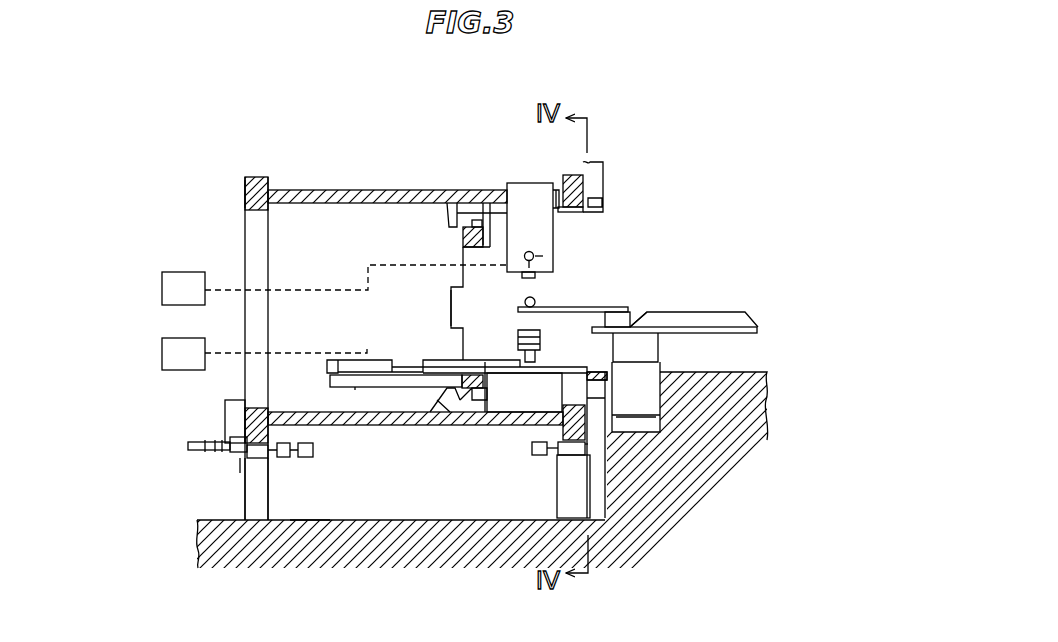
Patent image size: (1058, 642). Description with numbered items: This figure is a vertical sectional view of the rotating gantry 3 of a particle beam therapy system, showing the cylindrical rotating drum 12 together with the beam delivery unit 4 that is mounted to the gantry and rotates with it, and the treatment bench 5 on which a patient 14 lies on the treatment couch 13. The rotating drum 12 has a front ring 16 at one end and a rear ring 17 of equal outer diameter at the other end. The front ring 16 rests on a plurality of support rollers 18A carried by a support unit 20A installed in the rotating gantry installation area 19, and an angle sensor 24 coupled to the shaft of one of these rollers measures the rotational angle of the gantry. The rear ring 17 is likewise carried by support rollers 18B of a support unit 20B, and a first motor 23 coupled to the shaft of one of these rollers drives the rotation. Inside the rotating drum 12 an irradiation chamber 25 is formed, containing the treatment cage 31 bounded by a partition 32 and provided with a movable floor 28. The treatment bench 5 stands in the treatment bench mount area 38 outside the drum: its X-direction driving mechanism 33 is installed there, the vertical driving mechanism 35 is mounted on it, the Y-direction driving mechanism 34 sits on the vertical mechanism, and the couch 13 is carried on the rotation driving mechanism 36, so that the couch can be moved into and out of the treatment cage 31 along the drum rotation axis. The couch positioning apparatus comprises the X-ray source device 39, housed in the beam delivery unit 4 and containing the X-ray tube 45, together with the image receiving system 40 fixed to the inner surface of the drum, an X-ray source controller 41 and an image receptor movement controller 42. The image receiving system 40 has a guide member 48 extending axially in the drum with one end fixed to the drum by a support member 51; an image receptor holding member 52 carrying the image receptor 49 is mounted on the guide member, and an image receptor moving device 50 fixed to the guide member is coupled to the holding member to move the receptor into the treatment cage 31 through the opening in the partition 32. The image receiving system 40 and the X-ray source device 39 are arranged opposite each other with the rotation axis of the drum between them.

The rotating gantry 3 is at (335, 190).
The beam delivery unit 4 is at (505, 258).
The treatment bench 5 is at (760, 322).
The rotating drum 12 is at (285, 190).
The treatment couch 13 is at (615, 305).
The patient 14 is at (575, 305).
The front ring 16 is at (572, 175).
The rear ring 17 is at (245, 197).
The support rollers 18A is at (585, 448).
The support rollers 18B is at (240, 452).
The rotating gantry installation area 19 is at (305, 520).
The support unit 20A is at (557, 500).
The support unit 20B is at (255, 515).
The first motor 23 is at (316, 452).
The angle sensor 24 is at (545, 456).
The irradiation chamber 25 is at (555, 187).
The movable floor 28 is at (505, 378).
The treatment cage 31 is at (586, 232).
The partition 32 is at (449, 346).
The X-direction driving mechanism 33 is at (652, 422).
The Y-direction driving mechanism 34 is at (715, 312).
The vertical driving mechanism 35 is at (660, 347).
The rotation driving mechanism 36 is at (632, 312).
The treatment bench mount area 38 is at (727, 378).
The X-ray source device 39 is at (542, 255).
The image receiving system 40 is at (327, 376).
The X-ray source controller 41 is at (183, 272).
The image receptor movement controller 42 is at (181, 370).
The X-ray tube 45 is at (529, 251).
The guide member 48 is at (358, 388).
The image receptor 49 is at (541, 346).
The image receptor moving device 50 is at (352, 381).
The support member 51 is at (452, 388).
The image receptor holding member 52 is at (481, 358).